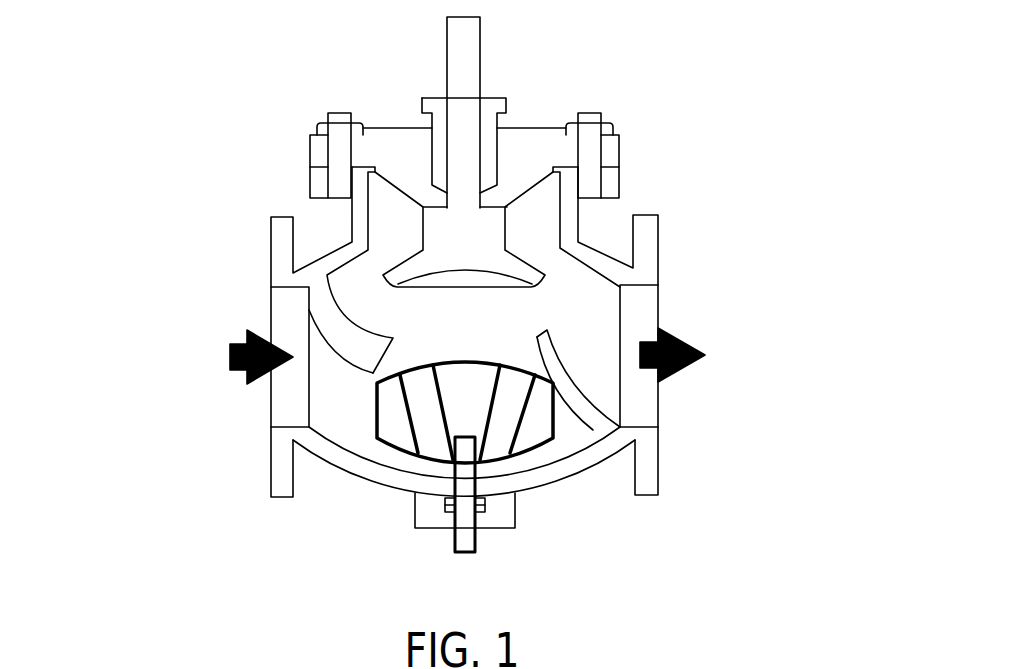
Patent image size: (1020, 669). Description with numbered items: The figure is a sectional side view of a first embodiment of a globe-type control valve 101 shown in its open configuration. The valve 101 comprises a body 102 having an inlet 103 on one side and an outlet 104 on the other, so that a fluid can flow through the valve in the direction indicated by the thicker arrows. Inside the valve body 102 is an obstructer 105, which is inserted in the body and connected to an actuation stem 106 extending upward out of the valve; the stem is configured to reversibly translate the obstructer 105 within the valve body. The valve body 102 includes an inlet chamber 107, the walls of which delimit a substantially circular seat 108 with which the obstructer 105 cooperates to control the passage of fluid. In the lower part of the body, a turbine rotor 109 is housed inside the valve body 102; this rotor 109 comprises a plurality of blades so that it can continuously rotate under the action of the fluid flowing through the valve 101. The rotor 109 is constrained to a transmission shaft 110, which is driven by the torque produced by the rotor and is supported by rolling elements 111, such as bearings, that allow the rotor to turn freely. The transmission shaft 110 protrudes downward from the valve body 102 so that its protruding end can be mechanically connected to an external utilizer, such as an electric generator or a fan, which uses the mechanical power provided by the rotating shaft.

The control valve 101 is at (625, 70).
The valve body 102 is at (324, 247).
The inlet 103 is at (285, 315).
The outlet 104 is at (643, 317).
The obstructer 105 is at (550, 331).
The actuation stem 106 is at (463, 125).
The inlet chamber 107 is at (347, 408).
The seat 108 is at (470, 240).
The turbine rotor 109 is at (507, 408).
The transmission shaft 110 is at (467, 517).
The rolling elements 111 is at (445, 505).